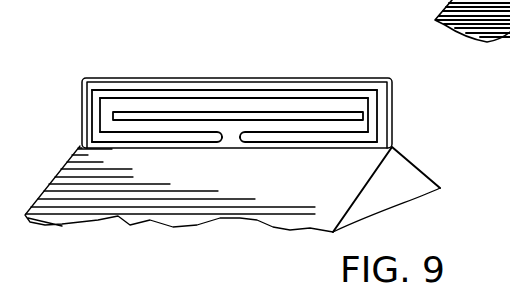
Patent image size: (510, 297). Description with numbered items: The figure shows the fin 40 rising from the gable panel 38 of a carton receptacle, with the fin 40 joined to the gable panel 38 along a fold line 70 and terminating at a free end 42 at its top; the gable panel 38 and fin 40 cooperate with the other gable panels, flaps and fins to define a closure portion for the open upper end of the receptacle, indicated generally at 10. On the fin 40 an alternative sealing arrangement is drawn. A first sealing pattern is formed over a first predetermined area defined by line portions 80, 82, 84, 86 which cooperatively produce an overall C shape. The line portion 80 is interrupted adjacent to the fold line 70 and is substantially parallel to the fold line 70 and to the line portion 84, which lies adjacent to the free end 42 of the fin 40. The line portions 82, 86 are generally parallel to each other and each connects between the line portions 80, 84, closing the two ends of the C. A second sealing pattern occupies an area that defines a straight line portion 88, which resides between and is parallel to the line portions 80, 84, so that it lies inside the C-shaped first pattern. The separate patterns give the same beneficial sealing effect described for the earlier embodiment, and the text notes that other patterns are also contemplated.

The antenna assembly 10 is at (429, 155).
The gable panel 38 is at (240, 208).
The fin 40 is at (98, 79).
The free end 42 is at (162, 80).
The fold line 70 is at (232, 144).
The line portion 80 is at (163, 143).
The line portion 82 is at (378, 117).
The line portion 84 is at (221, 91).
The line portion 86 is at (91, 116).
The straight line portion 88 is at (138, 120).